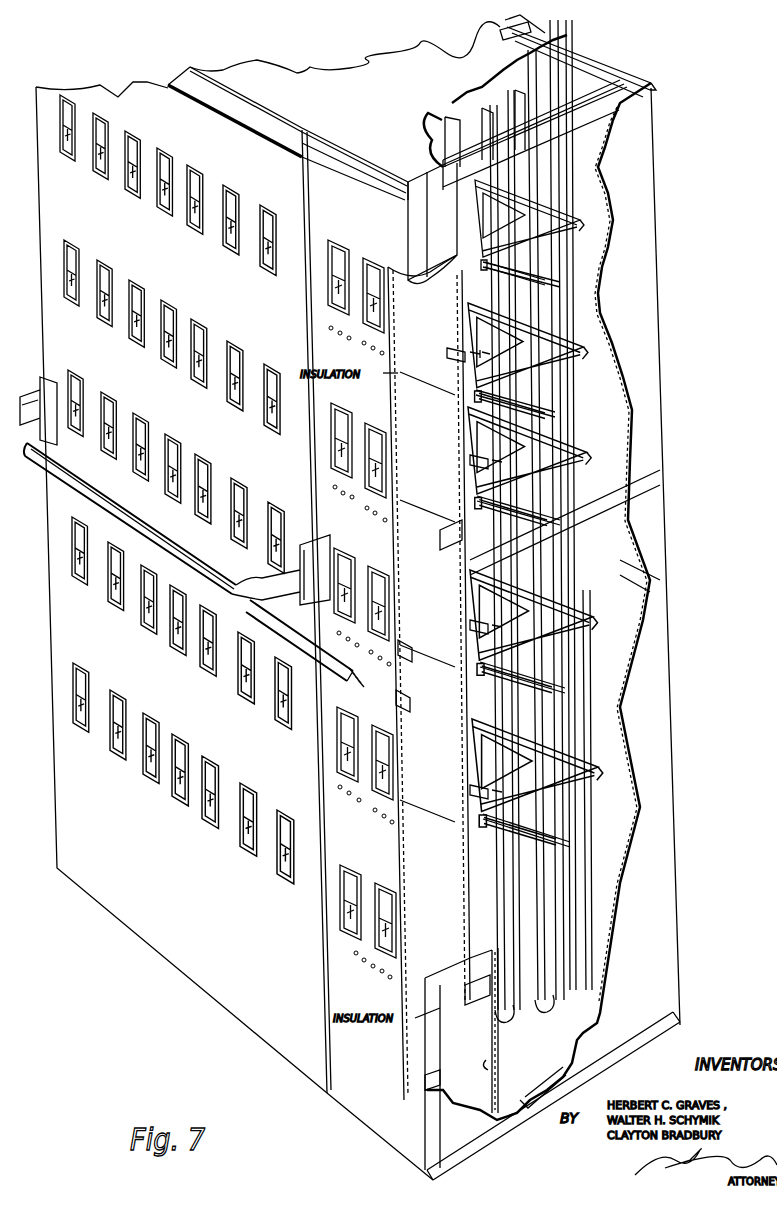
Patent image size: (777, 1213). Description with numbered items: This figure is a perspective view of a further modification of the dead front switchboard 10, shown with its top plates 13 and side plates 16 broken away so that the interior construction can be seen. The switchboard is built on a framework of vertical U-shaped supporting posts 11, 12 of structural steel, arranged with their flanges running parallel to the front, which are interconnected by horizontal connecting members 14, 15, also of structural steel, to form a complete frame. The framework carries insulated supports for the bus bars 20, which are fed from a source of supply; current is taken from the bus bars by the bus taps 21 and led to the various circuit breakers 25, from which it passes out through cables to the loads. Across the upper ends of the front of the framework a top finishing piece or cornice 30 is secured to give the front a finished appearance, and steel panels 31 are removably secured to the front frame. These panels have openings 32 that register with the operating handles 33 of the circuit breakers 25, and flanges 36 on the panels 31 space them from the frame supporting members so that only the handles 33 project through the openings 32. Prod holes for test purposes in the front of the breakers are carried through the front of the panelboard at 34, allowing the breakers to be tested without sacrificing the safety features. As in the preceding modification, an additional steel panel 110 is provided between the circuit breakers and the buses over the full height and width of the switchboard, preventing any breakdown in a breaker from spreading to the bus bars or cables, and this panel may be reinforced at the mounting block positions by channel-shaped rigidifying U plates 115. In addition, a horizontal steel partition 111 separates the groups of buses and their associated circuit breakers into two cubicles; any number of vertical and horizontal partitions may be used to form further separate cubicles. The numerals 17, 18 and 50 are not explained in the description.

The dead front switchboard 10 is at (685, 917).
The vertical U-shaped supporting post 11 is at (546, 44).
The vertical U-shaped supporting post 12 is at (437, 225).
The top plate 13 is at (378, 106).
The horizontal connecting member 14 is at (500, 40).
The horizontal connecting member 15 is at (620, 76).
The side plate 16 is at (636, 298).
The studs 17 is at (586, 76).
The wall sheathing 18 is at (604, 418).
The bus bar 20 is at (483, 108).
The bus tap 21 is at (580, 218).
The circuit breaker 25 is at (438, 455).
The cornice 30 is at (186, 82).
The steel panel 31 is at (44, 88).
The opening 32 is at (176, 797).
The operating handle 33 is at (112, 728).
The prod holes through the panelboard 34 is at (385, 524).
The flange 36 is at (407, 678).
The spacer block 50 is at (457, 549).
The steel panel 110 is at (488, 1066).
The steel partition 111 is at (596, 580).
The rigidifying U plate 115 is at (445, 353).